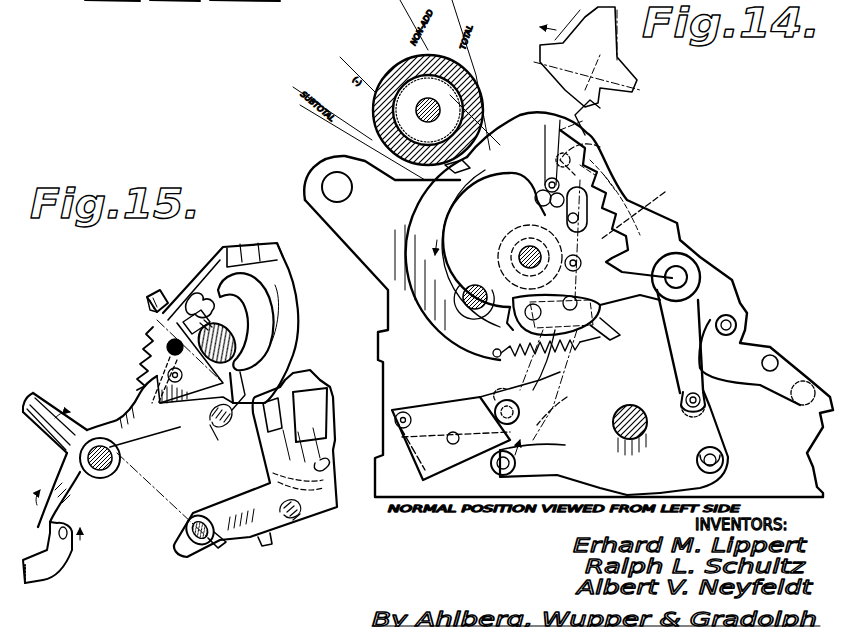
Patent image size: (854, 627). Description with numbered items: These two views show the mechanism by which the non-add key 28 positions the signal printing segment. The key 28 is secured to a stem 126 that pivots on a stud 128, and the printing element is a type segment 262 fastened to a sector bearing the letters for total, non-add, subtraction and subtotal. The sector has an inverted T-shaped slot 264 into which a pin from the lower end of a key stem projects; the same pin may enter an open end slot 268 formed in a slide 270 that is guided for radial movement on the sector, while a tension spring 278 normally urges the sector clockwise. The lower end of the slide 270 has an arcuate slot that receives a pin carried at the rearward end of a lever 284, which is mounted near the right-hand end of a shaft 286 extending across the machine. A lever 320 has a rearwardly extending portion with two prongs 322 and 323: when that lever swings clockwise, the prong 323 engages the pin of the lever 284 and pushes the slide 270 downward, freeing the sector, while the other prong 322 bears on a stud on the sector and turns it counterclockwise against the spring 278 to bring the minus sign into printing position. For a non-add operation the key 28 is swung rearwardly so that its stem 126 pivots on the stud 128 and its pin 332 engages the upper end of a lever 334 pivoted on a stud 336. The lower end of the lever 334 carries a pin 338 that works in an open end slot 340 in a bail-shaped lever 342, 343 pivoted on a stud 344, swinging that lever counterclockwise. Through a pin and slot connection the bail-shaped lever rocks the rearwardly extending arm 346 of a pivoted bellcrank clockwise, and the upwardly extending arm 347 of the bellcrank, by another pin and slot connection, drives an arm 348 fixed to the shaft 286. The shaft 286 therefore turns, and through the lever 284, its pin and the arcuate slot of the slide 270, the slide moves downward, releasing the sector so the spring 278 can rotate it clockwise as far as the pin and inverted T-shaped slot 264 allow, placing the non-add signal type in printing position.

In FIG. 14, the non-add key 28 is at (605, 50).
In FIG. 14, the key stem 126 is at (588, 107).
In FIG. 14, the stud 128 is at (600, 147).
In FIG. 14, the type segment 262 is at (543, 183).
In FIG. 15, the inverted T-shaped slot 264 is at (200, 297).
In FIG. 15, the open end slot 268 is at (297, 373).
In FIG. 15, the slide 270 is at (327, 393).
In FIG. 15, the tension spring 278 is at (212, 422).
In FIG. 14, the tension spring 278 is at (575, 350).
In FIG. 15, the lever 284 is at (292, 522).
In FIG. 15, the shaft 286 is at (220, 547).
In FIG. 14, the shaft 286 is at (683, 270).
In FIG. 15, the operating lever 320 is at (122, 425).
In FIG. 15, the prong 322 is at (165, 340).
In FIG. 15, the prong 323 is at (197, 397).
In FIG. 14, the pin 332 is at (553, 222).
In FIG. 14, the lever 334 is at (665, 192).
In FIG. 14, the stud 336 is at (596, 330).
In FIG. 14, the pin 338 is at (505, 388).
In FIG. 14, the open end slot 340 is at (513, 428).
In FIG. 14, the bail-shaped lever 342 is at (470, 412).
In FIG. 14, the bail-shaped lever 343 is at (478, 468).
In FIG. 14, the stud 344 is at (450, 432).
In FIG. 14, the rearwardly extending arm of bellcrank 346 is at (585, 470).
In FIG. 14, the upwardly extending arm of bellcrank 347 is at (703, 427).
In FIG. 14, the arm 348 is at (713, 397).